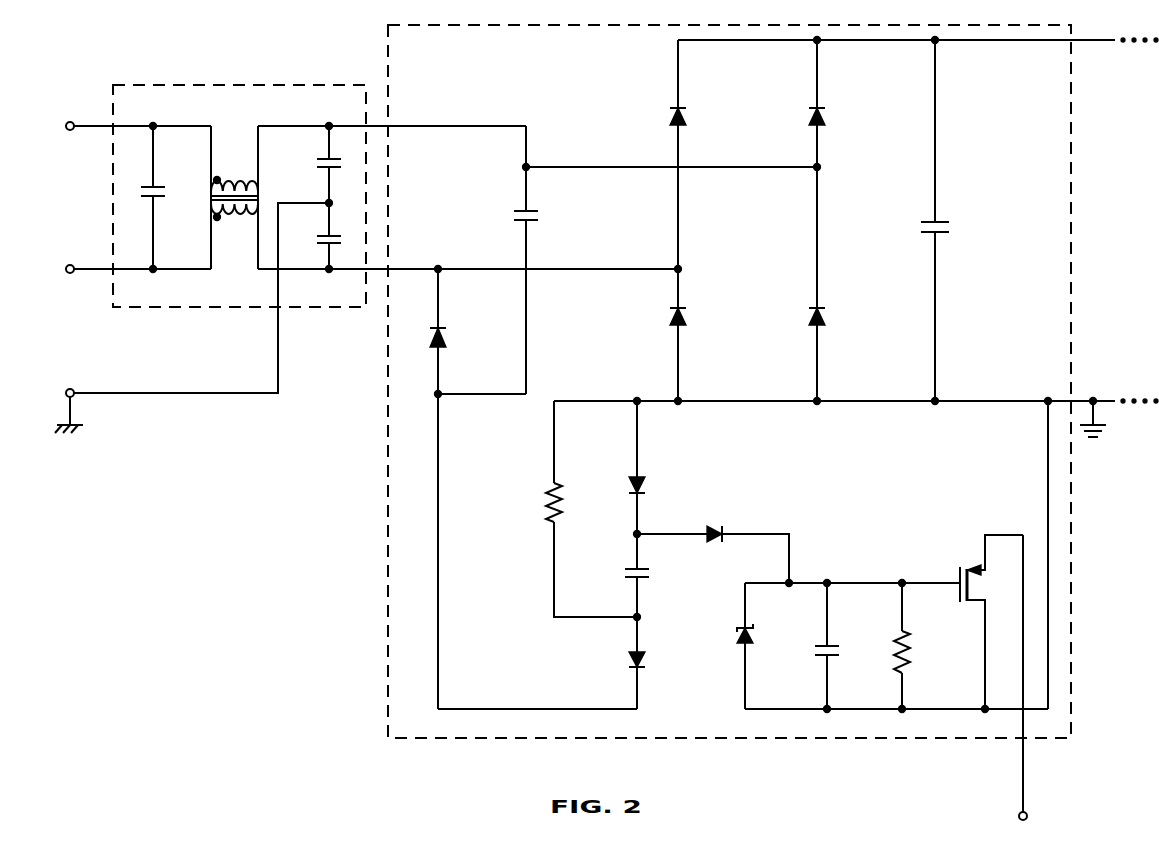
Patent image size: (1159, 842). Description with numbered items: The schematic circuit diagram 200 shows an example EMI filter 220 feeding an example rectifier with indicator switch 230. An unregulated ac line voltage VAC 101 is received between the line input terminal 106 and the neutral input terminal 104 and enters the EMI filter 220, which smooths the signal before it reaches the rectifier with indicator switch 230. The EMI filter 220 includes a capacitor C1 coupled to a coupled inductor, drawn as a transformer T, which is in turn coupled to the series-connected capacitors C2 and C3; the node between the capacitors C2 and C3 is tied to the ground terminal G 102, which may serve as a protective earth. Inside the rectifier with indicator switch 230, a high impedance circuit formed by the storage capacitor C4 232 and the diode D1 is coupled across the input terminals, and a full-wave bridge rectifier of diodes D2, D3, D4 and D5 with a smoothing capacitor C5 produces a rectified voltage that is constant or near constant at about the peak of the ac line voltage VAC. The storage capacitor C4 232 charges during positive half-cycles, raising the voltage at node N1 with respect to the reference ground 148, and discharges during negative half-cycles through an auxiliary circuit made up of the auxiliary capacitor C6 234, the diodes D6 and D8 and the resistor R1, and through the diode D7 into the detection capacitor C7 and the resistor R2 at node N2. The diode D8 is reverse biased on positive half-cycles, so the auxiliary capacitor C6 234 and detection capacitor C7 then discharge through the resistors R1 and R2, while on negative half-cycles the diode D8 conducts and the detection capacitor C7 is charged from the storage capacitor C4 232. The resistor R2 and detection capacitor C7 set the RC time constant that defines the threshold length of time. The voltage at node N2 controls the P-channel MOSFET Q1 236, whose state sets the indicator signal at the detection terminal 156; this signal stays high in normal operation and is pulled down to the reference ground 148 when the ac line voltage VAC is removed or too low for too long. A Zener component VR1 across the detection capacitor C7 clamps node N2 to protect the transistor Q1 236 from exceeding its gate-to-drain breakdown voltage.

The schematic circuit diagram 200 is at (327, 39).
The EMI filter 220 is at (185, 83).
The rectifier with indicator switch 230 is at (387, 527).
The storage capacitor C4 232 is at (520, 208).
The auxiliary capacitor C6 234 is at (631, 566).
The P-channel MOSFET Q1 236 is at (967, 559).
The line input terminal L 106 is at (72, 121).
The neutral input terminal N 104 is at (72, 274).
The ac line voltage VAC 101 is at (73, 198).
The ground terminal G 102 is at (76, 398).
The reference ground 148 is at (1106, 429).
The detection terminal 156 is at (1017, 813).
The capacitor C1 is at (161, 198).
The capacitor C2 is at (314, 164).
The capacitor C3 is at (314, 235).
The storage capacitor C4 is at (540, 260).
The capacitor C5 is at (949, 220).
The auxiliary capacitor C6 is at (651, 577).
The detection capacitor C7 is at (841, 646).
The diode D1 is at (478, 489).
The diode D2 is at (691, 154).
The diode D3 is at (829, 103).
The diode D4 is at (691, 335).
The diode D5 is at (829, 284).
The diode D6 is at (650, 467).
The diode D7 is at (713, 544).
The diode D8 is at (554, 663).
The resistor R1 is at (579, 509).
The resistor R2 is at (913, 646).
The P-channel MOSFET Q1 is at (977, 622).
The Zener component VR1 is at (725, 646).
The node N1 is at (528, 164).
The node N2 is at (829, 581).
The ground terminal G is at (189, 300).
The ac line voltage VAC is at (73, 207).
The common-mode choke transformer T is at (234, 197).